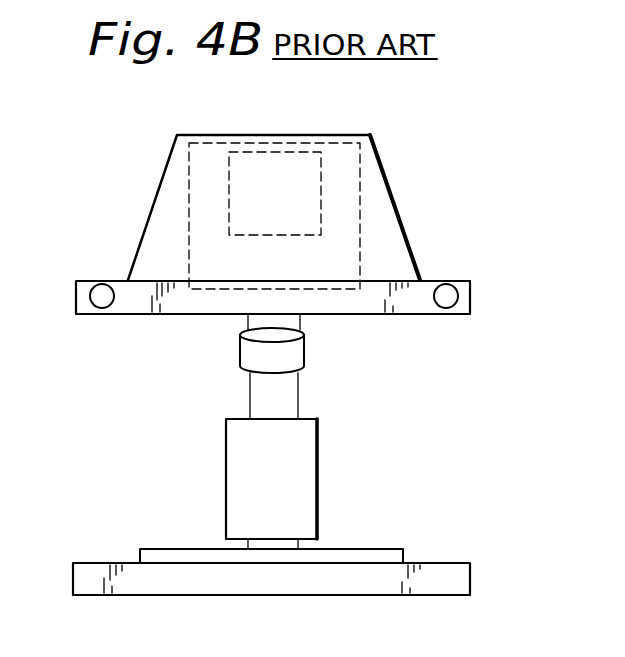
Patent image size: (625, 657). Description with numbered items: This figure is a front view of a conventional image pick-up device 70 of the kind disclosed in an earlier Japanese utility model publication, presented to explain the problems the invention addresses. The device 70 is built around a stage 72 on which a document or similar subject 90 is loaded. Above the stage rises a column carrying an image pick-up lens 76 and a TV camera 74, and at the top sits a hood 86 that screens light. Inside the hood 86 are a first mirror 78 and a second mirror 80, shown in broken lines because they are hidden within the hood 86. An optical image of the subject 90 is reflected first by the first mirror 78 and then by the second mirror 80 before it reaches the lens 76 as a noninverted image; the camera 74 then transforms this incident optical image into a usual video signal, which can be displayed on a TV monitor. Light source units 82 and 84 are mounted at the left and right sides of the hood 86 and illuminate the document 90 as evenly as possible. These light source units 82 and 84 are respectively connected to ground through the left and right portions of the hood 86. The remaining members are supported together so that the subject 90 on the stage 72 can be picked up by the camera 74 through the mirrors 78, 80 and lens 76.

The image pick-up device 70 is at (514, 177).
The stage 72 is at (276, 588).
The TV camera 74 is at (312, 455).
The image pick-up lens 76 is at (305, 355).
The first mirror 78 is at (360, 245).
The second mirror 80 is at (322, 188).
The light source unit 82 is at (98, 302).
The light source unit 84 is at (447, 301).
The hood 86 is at (264, 135).
The subject 90 is at (385, 548).